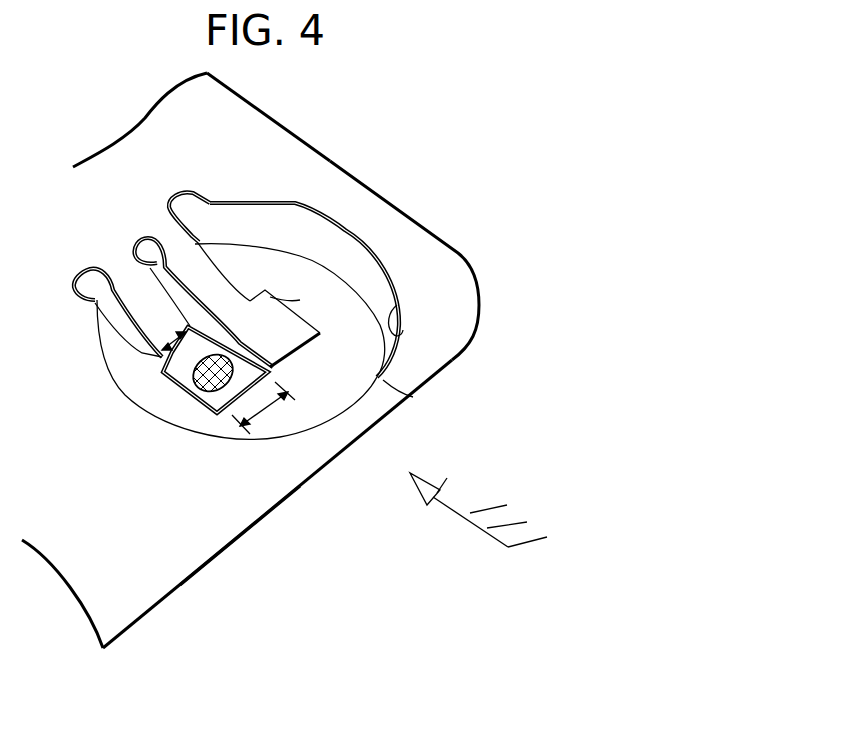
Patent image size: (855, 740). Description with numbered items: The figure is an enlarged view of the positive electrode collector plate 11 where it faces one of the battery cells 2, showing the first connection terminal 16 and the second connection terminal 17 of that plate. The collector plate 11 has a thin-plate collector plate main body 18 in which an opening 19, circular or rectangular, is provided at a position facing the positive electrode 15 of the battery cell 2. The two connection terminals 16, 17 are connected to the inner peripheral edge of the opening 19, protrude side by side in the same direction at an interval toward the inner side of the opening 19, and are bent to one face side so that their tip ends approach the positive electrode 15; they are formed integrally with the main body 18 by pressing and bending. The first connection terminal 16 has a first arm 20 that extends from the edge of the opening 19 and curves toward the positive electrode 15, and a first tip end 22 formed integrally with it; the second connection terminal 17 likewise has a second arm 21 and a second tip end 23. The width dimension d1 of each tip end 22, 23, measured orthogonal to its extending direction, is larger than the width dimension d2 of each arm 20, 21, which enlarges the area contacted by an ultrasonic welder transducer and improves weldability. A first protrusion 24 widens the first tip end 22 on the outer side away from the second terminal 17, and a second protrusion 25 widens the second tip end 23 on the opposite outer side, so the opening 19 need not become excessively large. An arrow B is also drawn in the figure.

The battery cell 2 is at (383, 247).
The positive electrode collector plate 11 is at (277, 112).
The positive electrode 15 is at (413, 397).
The first connection terminal 16 is at (140, 350).
The second connection terminal 17 is at (217, 295).
The collector plate main body 18 is at (218, 506).
The opening 19 is at (395, 306).
The first arm 20 is at (128, 316).
The second arm 21 is at (199, 242).
The first tip end 22 is at (210, 405).
The second tip end 23 is at (350, 313).
The first protrusion 24 is at (193, 382).
The second protrusion 25 is at (280, 292).
The width dimension of tip end d1 is at (280, 405).
The width dimension of arm d2 is at (182, 331).
The direction B is at (453, 504).